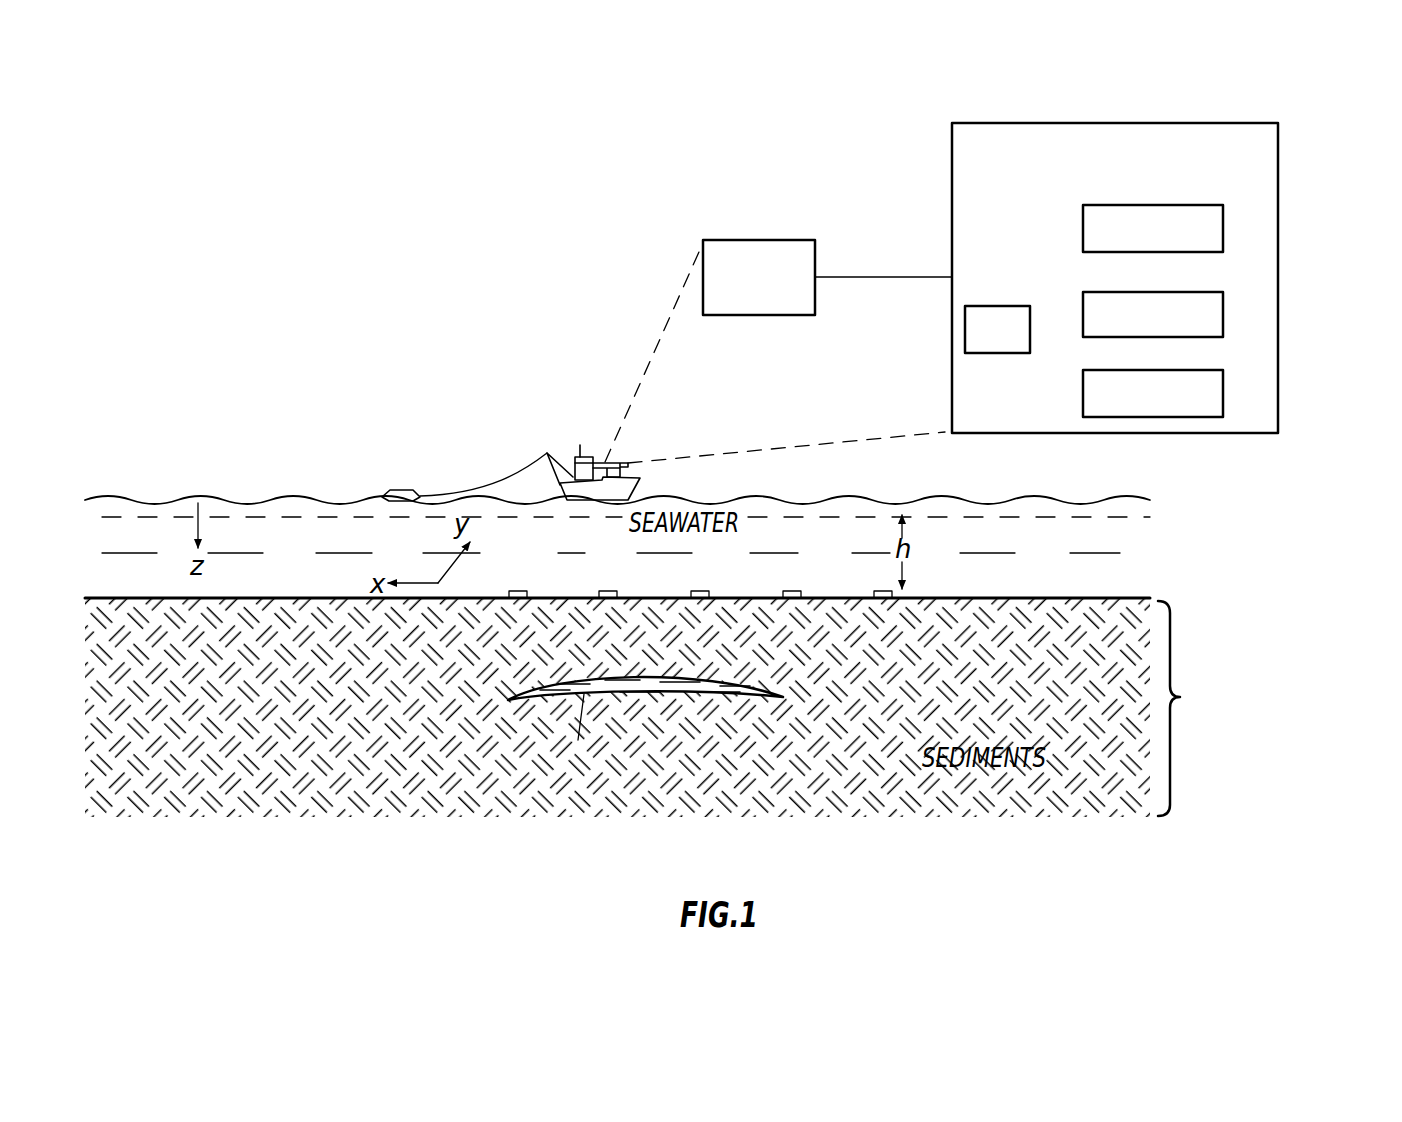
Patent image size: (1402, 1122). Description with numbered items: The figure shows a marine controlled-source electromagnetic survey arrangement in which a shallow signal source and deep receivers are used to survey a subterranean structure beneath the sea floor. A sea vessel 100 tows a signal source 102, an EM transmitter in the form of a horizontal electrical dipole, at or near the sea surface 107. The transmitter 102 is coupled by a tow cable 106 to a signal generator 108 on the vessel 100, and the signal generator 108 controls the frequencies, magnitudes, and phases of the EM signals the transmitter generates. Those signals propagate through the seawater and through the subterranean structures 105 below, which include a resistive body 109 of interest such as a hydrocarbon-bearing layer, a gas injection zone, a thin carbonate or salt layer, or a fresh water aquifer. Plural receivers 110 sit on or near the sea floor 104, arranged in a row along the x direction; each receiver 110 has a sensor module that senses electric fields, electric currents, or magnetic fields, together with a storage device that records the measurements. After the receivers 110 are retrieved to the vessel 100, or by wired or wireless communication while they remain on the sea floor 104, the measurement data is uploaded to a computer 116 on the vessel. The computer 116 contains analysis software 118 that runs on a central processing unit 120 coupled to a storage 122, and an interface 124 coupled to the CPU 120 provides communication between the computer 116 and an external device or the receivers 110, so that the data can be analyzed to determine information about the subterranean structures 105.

The sea vessel 100 is at (658, 487).
The signal source 102 is at (398, 490).
The sea floor 104 is at (993, 598).
The subterranean structures 105 is at (1180, 697).
The tow cable 106 is at (540, 467).
The sea surface 107 is at (157, 497).
The signal generator 108 is at (728, 240).
The resistive body 109 is at (685, 694).
The receiver 110 is at (608, 591).
The computer 116 is at (952, 170).
The analysis software 118 is at (1223, 209).
The central processing unit 120 is at (1223, 314).
The storage 122 is at (1223, 383).
The interface 124 is at (965, 327).